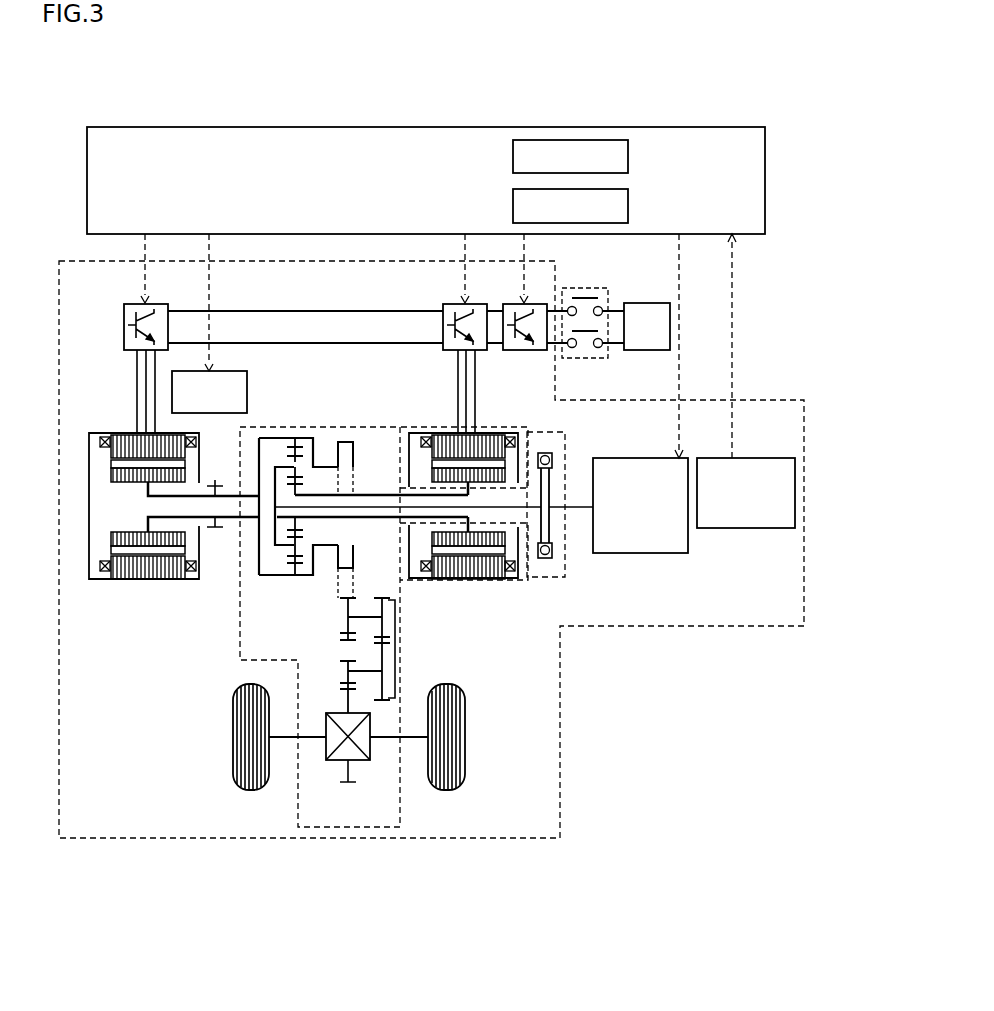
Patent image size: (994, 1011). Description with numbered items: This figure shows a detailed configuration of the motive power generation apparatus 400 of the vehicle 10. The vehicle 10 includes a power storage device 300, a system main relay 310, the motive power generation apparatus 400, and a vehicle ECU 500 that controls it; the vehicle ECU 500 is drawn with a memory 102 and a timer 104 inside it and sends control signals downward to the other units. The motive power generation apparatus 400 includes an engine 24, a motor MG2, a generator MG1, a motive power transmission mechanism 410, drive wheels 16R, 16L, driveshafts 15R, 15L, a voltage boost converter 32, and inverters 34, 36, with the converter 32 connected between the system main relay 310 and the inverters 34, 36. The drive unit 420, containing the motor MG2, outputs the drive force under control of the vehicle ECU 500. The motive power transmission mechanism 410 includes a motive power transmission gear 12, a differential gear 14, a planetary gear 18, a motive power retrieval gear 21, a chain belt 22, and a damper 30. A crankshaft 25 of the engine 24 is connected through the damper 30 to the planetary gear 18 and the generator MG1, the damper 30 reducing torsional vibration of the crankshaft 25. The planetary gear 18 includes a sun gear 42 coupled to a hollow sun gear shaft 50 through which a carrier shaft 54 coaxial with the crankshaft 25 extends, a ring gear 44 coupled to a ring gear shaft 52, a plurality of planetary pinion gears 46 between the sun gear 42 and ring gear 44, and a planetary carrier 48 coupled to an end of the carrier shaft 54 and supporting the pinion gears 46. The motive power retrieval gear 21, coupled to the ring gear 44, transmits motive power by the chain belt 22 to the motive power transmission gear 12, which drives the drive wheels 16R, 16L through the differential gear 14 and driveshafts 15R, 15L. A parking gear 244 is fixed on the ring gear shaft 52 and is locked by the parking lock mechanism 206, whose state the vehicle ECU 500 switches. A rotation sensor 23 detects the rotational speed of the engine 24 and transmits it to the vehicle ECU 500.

The vehicle 10 is at (96, 63).
The vehicle ECU 500 is at (137, 126).
The memory 102 is at (630, 157).
The timer 104 is at (630, 207).
The inverter 36 is at (130, 303).
The inverter 34 is at (450, 303).
The voltage boost converter 32 is at (510, 303).
The system main relay 310 is at (586, 288).
The power storage device 300 is at (644, 303).
The parking lock mechanism 206 is at (228, 371).
The motive power generation apparatus 400 is at (560, 737).
The drive unit 420 is at (163, 561).
The motive power transmission mechanism 410 is at (231, 655).
The parking gear 244 is at (216, 480).
The ring gear shaft 52 is at (230, 527).
The planetary gear 18 is at (279, 589).
The motive power retrieval gear 21 is at (346, 442).
The sun gear 42 is at (310, 523).
The ring gear 44 is at (295, 440).
The planetary pinion gears 46 is at (301, 462).
The planetary carrier 48 is at (273, 485).
The hollow sun gear shaft 50 is at (328, 520).
The carrier shaft 54 is at (371, 508).
The damper 30 is at (545, 560).
The crankshaft 25 is at (580, 510).
The engine 24 is at (611, 457).
The rotation sensor 23 is at (714, 457).
The chain belt 22 is at (357, 585).
The motive power transmission gear 12 is at (407, 652).
The differential gear 14 is at (340, 762).
The driveshaft 15L is at (283, 741).
The driveshaft 15R is at (413, 741).
The drive wheel 16L is at (232, 736).
The drive wheel 16R is at (465, 737).
The generator MG1 is at (488, 588).
The motor MG2 is at (164, 588).